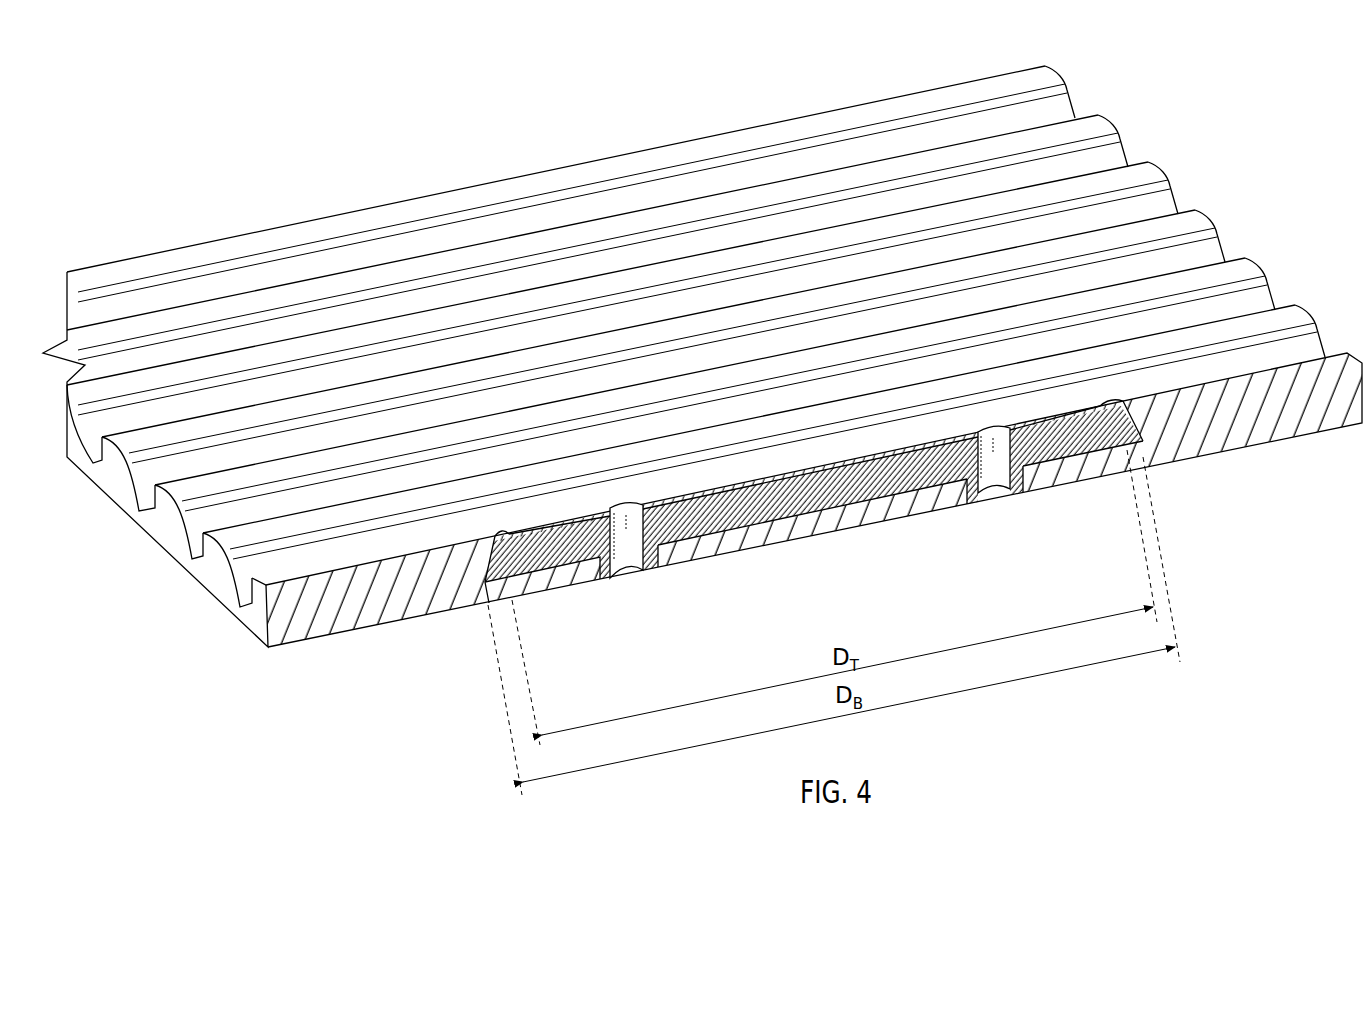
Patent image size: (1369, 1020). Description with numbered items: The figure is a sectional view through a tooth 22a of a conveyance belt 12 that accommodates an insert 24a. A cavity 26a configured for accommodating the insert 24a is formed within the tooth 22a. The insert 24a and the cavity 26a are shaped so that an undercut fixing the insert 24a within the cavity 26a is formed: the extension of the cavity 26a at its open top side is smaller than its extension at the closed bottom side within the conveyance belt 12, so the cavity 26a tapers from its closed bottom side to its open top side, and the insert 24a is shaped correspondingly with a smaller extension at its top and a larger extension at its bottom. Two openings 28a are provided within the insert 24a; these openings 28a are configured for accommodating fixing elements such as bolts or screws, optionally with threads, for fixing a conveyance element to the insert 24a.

The conveyance belt 12 is at (554, 131).
The tooth 22a is at (358, 627).
The insert 24a is at (808, 503).
The cavity 26a is at (1047, 485).
The openings 28a is at (629, 598).